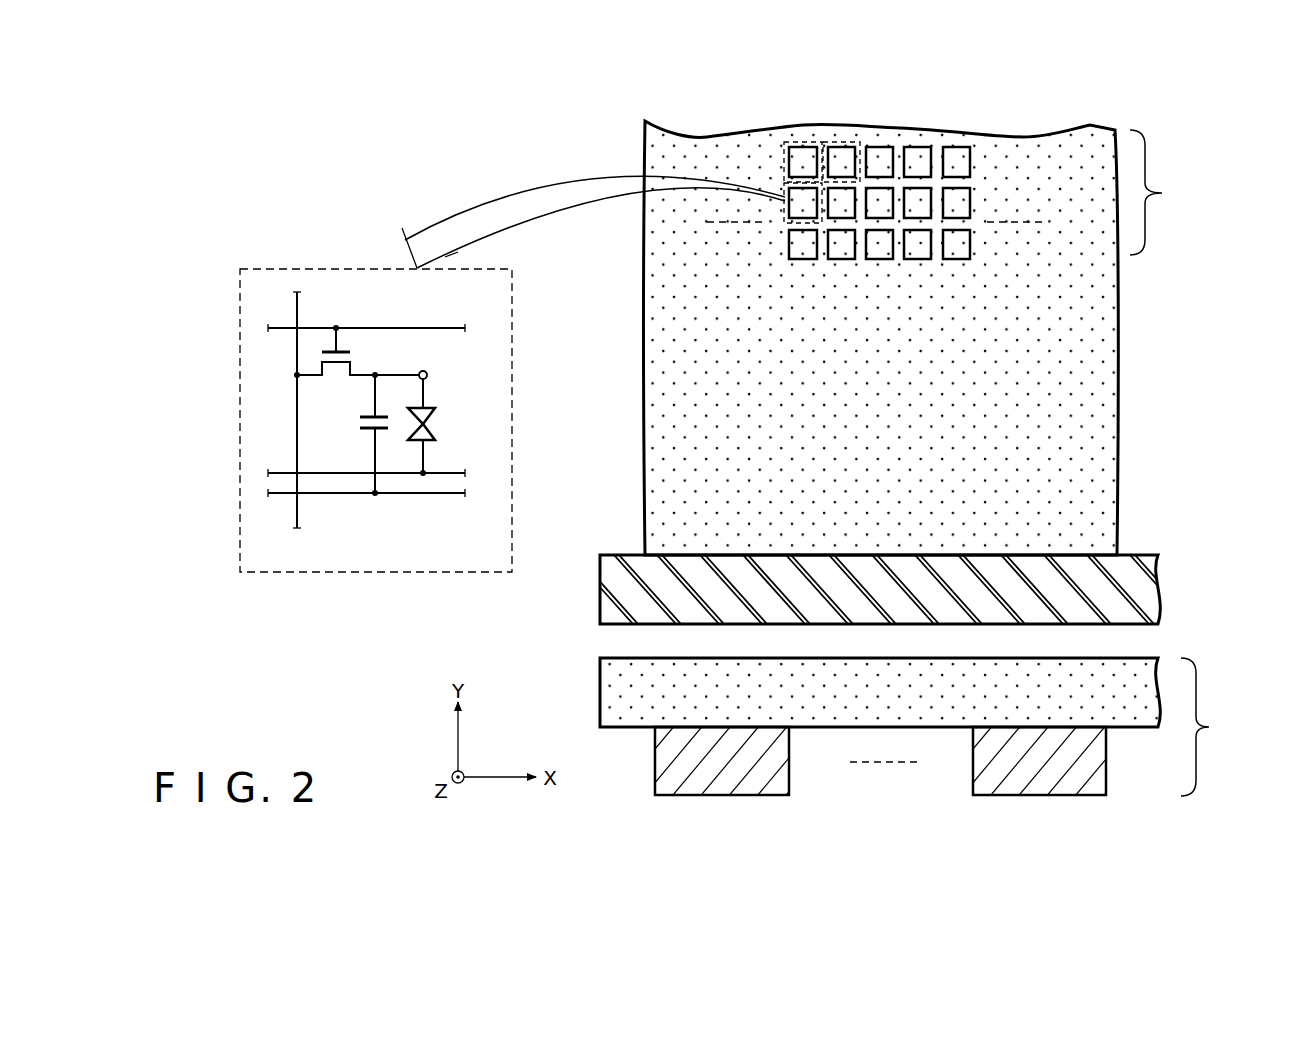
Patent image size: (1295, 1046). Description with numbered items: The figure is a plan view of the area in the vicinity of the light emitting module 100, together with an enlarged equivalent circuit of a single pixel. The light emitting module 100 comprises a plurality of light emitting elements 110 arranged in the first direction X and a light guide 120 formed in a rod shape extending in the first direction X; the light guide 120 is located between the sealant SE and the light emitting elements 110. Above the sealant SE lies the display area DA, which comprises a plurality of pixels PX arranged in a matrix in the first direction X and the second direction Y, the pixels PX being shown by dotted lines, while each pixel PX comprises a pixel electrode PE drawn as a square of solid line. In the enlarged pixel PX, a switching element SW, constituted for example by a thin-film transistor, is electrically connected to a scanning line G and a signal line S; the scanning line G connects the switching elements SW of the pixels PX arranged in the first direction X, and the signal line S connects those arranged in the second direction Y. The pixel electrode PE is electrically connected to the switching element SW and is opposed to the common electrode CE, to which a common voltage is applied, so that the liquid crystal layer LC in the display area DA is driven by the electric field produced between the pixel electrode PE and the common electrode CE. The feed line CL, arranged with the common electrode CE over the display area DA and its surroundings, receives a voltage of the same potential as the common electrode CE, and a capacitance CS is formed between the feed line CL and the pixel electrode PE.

The pixel PX is at (800, 205).
The pixel electrode PE is at (805, 243).
The liquid crystal layer LC is at (1055, 147).
The display area DA is at (1164, 192).
The sealant SE is at (1145, 596).
The light emitting module 100 is at (926, 755).
The light guide 120 is at (1138, 717).
The light emitting element 110 is at (724, 786).
The scanning line G is at (282, 328).
The signal line S is at (295, 408).
The switching element SW is at (364, 364).
The capacitance CS is at (354, 426).
The common electrode CE is at (445, 477).
The feed line CL is at (407, 497).